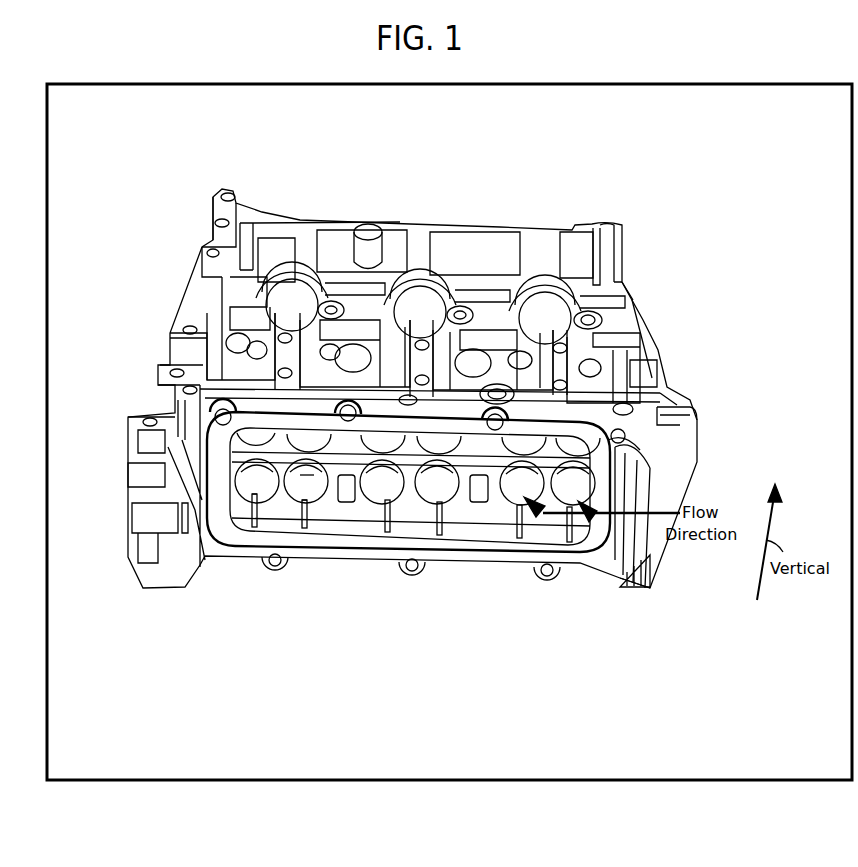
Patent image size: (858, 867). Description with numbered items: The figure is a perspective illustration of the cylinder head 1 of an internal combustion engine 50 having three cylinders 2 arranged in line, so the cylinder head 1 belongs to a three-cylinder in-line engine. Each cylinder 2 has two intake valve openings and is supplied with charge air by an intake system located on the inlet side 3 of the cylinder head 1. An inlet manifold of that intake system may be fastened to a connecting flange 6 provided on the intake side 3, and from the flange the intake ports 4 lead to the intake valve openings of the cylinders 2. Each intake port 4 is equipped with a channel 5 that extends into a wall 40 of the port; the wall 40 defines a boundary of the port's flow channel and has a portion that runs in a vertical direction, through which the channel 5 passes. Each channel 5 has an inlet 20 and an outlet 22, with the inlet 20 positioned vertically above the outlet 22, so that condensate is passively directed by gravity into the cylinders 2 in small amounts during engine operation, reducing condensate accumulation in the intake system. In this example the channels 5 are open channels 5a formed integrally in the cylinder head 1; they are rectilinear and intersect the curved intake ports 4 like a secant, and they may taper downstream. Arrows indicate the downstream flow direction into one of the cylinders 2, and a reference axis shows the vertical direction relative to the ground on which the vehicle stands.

The internal combustion engine 50 is at (62, 88).
The cylinder head 1 is at (223, 185).
The cylinders 2 is at (297, 316).
The inlet side 3 is at (283, 634).
The intake ports 4 is at (417, 469).
The channel 5 is at (580, 597).
The open channels 5a is at (427, 611).
The outlet 22 is at (305, 500).
The walls 40 is at (316, 492).
The inlet 20 is at (305, 530).
The connecting flange 6 is at (650, 585).